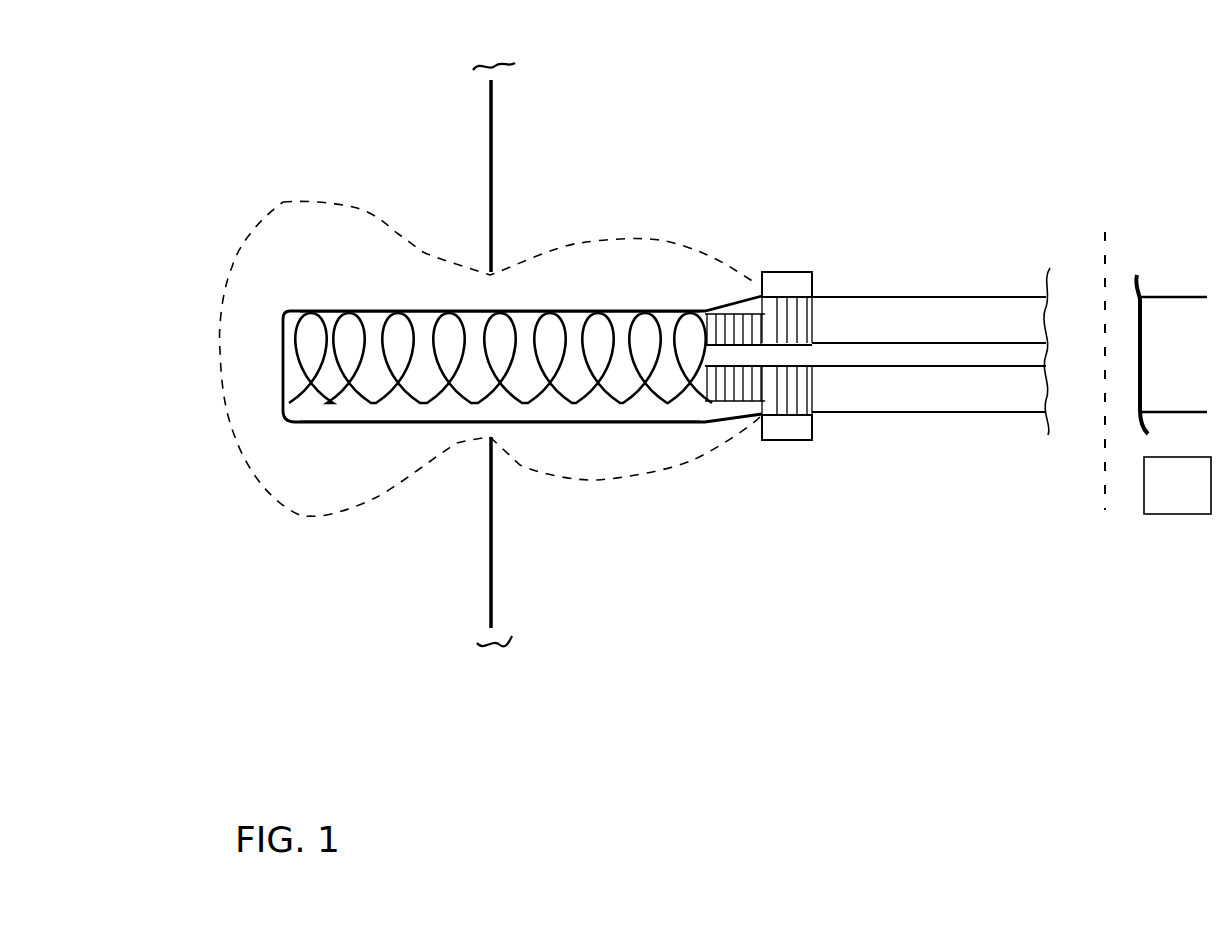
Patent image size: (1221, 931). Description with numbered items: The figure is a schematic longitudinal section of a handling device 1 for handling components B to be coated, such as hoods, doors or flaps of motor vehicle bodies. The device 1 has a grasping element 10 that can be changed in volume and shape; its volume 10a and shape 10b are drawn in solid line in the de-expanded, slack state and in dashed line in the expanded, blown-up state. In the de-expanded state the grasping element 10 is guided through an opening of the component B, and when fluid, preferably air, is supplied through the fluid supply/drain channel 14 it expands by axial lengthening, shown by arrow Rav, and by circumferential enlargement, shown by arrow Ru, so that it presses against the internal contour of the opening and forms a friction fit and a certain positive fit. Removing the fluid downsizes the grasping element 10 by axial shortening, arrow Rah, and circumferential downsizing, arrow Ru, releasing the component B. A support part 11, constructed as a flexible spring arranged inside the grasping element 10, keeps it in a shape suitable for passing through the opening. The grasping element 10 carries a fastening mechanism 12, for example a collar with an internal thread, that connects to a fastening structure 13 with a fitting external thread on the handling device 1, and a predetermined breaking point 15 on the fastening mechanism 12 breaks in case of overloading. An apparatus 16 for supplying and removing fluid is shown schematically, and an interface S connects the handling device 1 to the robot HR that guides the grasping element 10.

The handling device 1 is at (840, 194).
The grasping element 10 is at (327, 302).
The volume 10a is at (372, 337).
The shape 10b is at (467, 308).
The support part 11 is at (583, 400).
The fastening mechanism 12 is at (790, 443).
The fastening structure 13 is at (807, 402).
The fluid supply/drain channel 14 is at (918, 362).
The predetermined breaking point 15 is at (775, 280).
The apparatus for supplying and/or removing fluid 16 is at (1178, 508).
The component to be coated B is at (495, 120).
The arrow of circumferential enlargement/downsizing Ru is at (571, 212).
The arrow of axial lengthening Rav is at (262, 560).
The arrow of axial shortening Rah is at (266, 592).
The interface S is at (1103, 502).
The robot/manipulator HR is at (1170, 289).